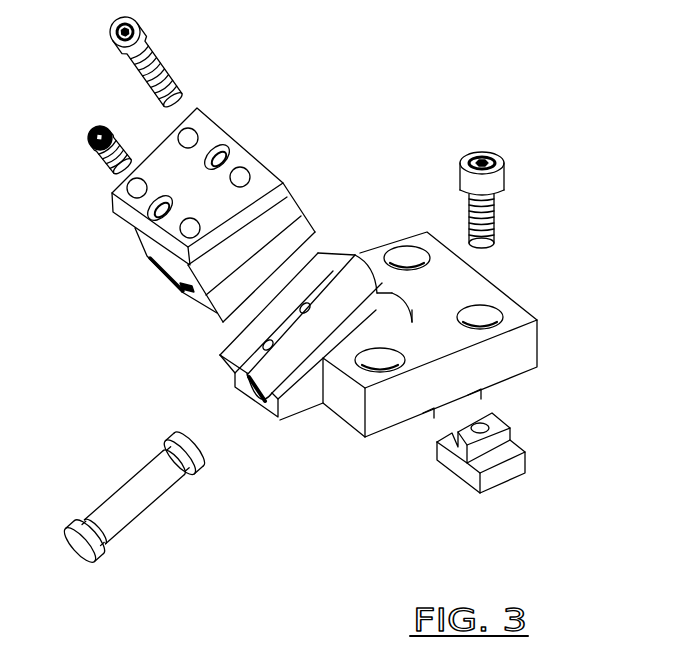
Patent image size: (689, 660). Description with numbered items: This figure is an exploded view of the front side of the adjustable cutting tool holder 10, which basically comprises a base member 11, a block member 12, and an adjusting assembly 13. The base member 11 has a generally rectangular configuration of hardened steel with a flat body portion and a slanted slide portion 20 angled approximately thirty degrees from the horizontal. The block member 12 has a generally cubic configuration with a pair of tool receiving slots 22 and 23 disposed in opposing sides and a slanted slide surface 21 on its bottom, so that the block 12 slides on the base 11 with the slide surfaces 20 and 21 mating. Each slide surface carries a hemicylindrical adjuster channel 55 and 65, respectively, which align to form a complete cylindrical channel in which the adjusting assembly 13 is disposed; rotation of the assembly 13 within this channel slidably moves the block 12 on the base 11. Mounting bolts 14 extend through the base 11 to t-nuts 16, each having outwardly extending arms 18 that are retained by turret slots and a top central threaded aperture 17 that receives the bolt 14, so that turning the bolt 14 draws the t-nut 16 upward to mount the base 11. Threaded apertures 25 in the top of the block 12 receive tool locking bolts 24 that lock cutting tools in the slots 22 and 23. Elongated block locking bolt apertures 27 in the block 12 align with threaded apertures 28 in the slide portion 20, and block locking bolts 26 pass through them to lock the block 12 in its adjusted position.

The adjustable cutting tool holder 10 is at (552, 166).
The base member 11 is at (553, 370).
The block member 12 is at (236, 224).
The adjusting assembly 13 is at (167, 521).
The mounting bolt 14 is at (495, 226).
The t-nut 16 is at (487, 461).
The threaded aperture 17 is at (490, 421).
The arm 18 is at (436, 452).
The slide portion 20 is at (277, 338).
The slide surface 21 is at (148, 286).
The tool receiving slot 22 is at (135, 257).
The tool receiving slot 23 is at (283, 203).
The tool locking bolt 24 is at (98, 160).
The threaded aperture 25 is at (248, 172).
The block locking bolt 26 is at (160, 62).
The block locking bolt aperture 27 is at (215, 142).
The threaded aperture 28 is at (308, 304).
The adjuster channel 55 is at (300, 377).
The adjuster channel 65 is at (193, 310).